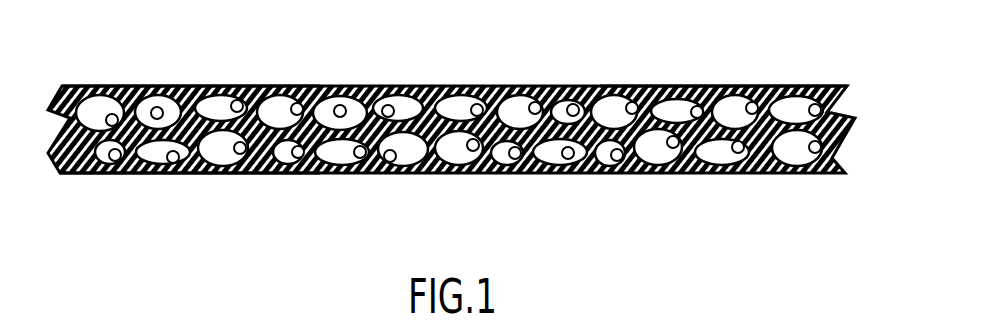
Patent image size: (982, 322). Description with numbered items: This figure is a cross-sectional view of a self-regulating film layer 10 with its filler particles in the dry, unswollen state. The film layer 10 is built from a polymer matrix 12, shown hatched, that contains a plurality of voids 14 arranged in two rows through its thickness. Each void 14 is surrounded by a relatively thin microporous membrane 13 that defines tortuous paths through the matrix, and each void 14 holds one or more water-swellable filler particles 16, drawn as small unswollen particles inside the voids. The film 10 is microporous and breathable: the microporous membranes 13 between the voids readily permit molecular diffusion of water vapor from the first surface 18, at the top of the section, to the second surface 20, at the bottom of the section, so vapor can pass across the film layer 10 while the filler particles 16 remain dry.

The self-regulating film layer 10 is at (847, 171).
The polymer matrix 12 is at (783, 86).
The microporous membranes 13 is at (447, 118).
The voids 14 is at (545, 158).
The water-swellable filler particles 16 is at (585, 163).
The first surface 18 is at (105, 86).
The second surface 20 is at (128, 172).